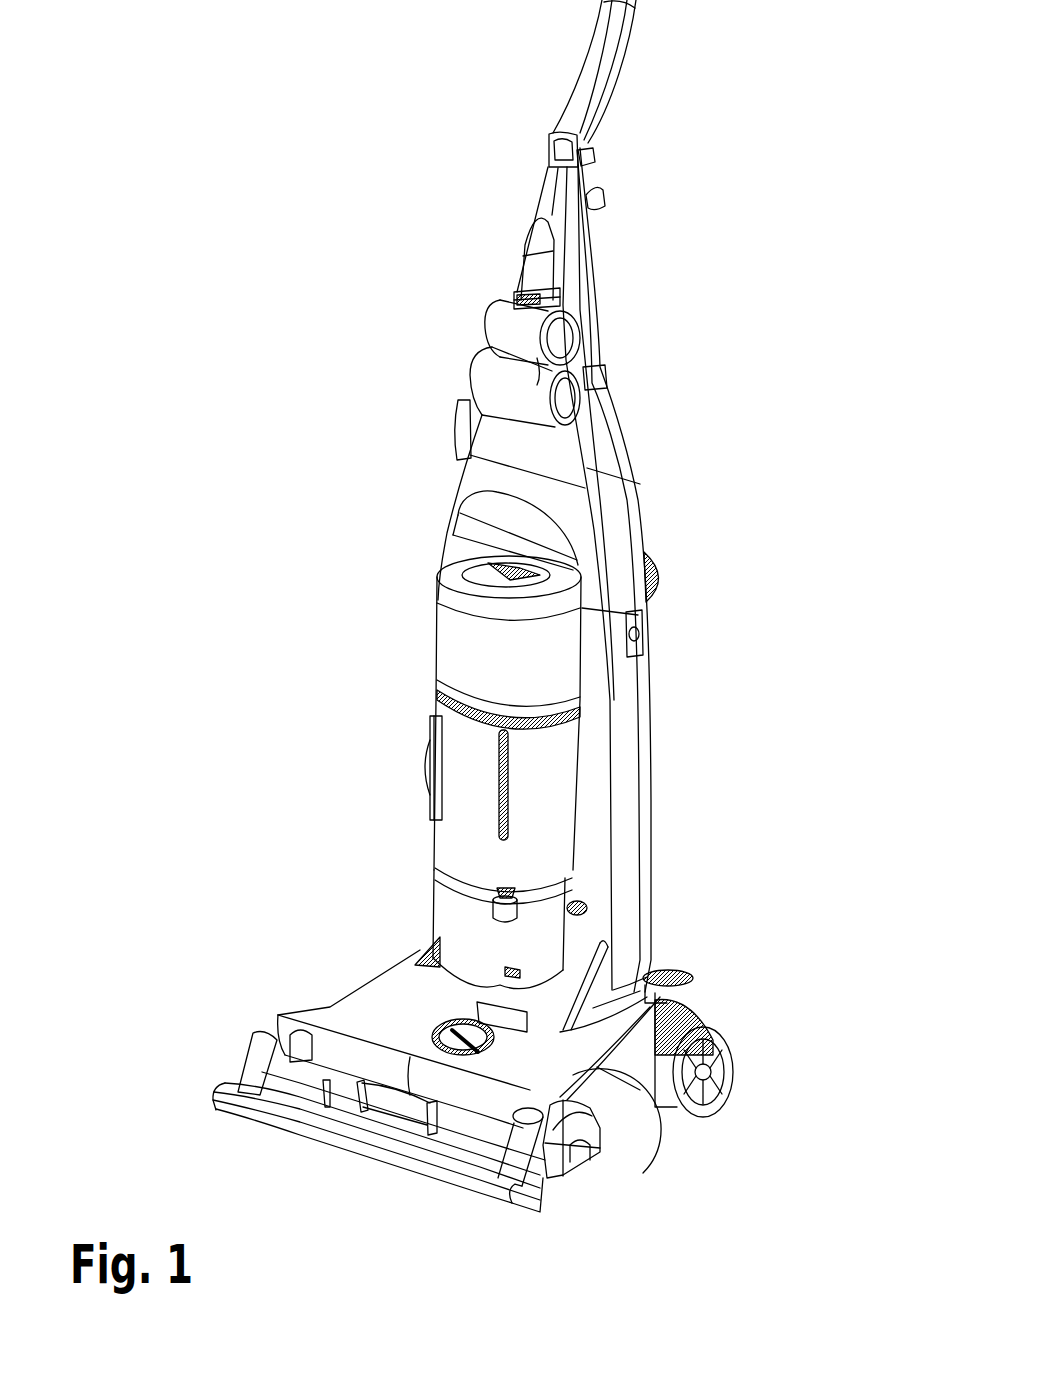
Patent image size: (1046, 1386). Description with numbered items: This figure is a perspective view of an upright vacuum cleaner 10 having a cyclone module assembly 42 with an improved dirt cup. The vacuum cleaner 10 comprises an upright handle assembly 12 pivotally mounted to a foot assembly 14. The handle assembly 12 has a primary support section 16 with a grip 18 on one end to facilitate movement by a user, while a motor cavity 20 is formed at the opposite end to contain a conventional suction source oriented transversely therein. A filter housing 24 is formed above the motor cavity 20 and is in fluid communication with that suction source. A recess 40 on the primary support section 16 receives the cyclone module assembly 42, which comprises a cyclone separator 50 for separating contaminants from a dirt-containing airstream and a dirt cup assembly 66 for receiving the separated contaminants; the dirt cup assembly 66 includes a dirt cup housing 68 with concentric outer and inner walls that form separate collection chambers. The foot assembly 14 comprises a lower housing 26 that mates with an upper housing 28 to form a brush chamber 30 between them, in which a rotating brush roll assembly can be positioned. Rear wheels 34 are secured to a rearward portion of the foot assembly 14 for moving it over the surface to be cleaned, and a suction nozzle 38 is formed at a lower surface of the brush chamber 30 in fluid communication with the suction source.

The upright vacuum cleaner 10 is at (776, 161).
The upright handle assembly 12 is at (598, 280).
The foot assembly 14 is at (328, 1005).
The primary support section 16 is at (543, 203).
The grip 18 is at (606, 53).
The motor cavity 20 is at (595, 983).
The filter housing 24 is at (408, 929).
The lower housing 26 is at (592, 1172).
The upper housing 28 is at (597, 1067).
The brush chamber 30 is at (643, 1173).
The rear wheels 34 is at (733, 1057).
The suction nozzle 38 is at (558, 1183).
The recess 40 is at (448, 560).
The cyclone module assembly 42 is at (419, 740).
The cyclone separator 50 is at (436, 595).
The dirt cup assembly 66 is at (432, 834).
The dirt cup housing 68 is at (456, 806).